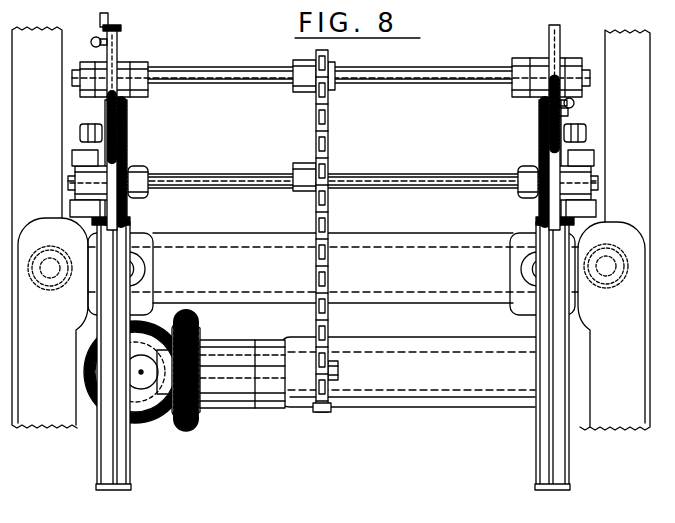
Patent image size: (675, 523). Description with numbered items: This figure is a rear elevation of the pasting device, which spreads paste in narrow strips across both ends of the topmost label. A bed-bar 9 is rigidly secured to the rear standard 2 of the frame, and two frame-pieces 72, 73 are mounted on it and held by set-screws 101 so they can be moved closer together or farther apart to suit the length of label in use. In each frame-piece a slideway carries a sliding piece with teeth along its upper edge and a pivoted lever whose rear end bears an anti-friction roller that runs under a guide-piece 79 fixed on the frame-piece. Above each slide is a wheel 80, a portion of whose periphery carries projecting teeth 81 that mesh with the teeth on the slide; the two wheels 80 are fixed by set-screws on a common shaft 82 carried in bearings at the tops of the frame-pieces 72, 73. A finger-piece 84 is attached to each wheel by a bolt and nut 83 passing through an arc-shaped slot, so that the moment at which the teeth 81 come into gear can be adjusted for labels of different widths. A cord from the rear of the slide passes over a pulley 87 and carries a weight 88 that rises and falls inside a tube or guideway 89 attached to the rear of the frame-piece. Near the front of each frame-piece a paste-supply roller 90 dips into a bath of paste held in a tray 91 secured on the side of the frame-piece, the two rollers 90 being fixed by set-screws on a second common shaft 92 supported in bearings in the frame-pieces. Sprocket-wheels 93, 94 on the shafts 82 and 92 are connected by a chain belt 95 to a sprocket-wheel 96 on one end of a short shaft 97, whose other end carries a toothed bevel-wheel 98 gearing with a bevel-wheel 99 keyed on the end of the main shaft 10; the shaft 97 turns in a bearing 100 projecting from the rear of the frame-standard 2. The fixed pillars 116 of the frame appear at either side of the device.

The rear standard 2 is at (380, 372).
The bed-bar 9 is at (333, 268).
The main shaft 10 is at (139, 378).
The frame-piece 72 is at (127, 152).
The frame-piece 73 is at (520, 238).
The guide-piece 79 is at (88, 140).
The wheel 80 is at (118, 52).
The projecting teeth 81 is at (119, 27).
The common shaft 82 is at (445, 78).
The bolt and nut 83 is at (91, 43).
The finger-piece 84 is at (104, 26).
The pulley 87 is at (100, 185).
The weight 88 is at (130, 487).
The tube or guideway 89 is at (112, 447).
The paste-supply roller 90 is at (78, 158).
The tray 91 is at (75, 208).
The common shaft 92 is at (417, 178).
The sprocket-wheel 93 is at (305, 76).
The sprocket-wheel 94 is at (298, 172).
The chain belt 95 is at (323, 145).
The sprocket-wheel 96 is at (329, 412).
The short shaft 97 is at (339, 372).
The toothed bevel-wheel 98 is at (186, 426).
The bevel-wheel 99 is at (82, 368).
The bearing 100 is at (242, 374).
The set-screws 101 is at (138, 272).
The fixed pillars 116 is at (331, 228).